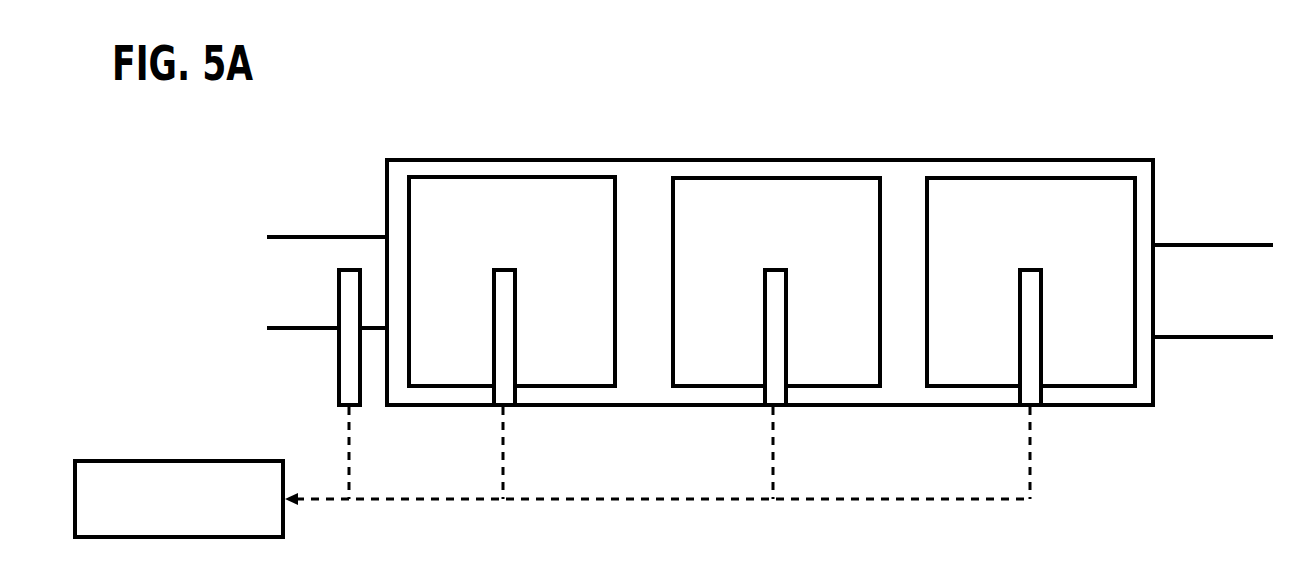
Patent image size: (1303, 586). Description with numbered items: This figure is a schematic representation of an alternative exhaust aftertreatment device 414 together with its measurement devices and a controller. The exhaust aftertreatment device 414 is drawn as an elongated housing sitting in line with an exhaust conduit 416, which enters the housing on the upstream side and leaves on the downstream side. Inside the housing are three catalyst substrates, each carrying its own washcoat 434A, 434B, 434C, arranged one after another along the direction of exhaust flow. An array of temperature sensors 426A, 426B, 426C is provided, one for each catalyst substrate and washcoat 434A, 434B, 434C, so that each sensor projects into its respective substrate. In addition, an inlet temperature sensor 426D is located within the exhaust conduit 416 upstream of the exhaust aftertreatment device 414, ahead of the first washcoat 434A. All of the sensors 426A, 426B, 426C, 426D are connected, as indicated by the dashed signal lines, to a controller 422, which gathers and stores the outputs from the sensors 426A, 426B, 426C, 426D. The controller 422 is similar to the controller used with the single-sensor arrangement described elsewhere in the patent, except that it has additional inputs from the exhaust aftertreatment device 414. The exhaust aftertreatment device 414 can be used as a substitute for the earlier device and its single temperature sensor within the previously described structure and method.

The exhaust aftertreatment device 414 is at (421, 72).
The exhaust conduit 416 is at (292, 244).
The controller 422 is at (148, 473).
The temperature sensor 426A is at (507, 373).
The temperature sensor 426B is at (775, 372).
The temperature sensor 426C is at (1033, 377).
The inlet temperature sensor 426D is at (354, 375).
The washcoat 434A is at (516, 197).
The washcoat 434B is at (770, 193).
The washcoat 434C is at (1015, 198).